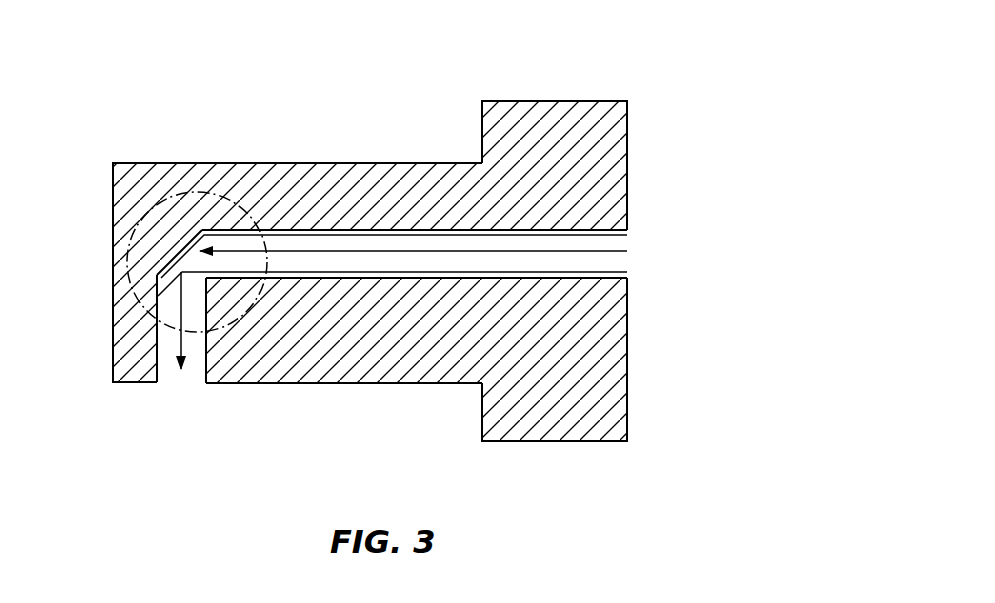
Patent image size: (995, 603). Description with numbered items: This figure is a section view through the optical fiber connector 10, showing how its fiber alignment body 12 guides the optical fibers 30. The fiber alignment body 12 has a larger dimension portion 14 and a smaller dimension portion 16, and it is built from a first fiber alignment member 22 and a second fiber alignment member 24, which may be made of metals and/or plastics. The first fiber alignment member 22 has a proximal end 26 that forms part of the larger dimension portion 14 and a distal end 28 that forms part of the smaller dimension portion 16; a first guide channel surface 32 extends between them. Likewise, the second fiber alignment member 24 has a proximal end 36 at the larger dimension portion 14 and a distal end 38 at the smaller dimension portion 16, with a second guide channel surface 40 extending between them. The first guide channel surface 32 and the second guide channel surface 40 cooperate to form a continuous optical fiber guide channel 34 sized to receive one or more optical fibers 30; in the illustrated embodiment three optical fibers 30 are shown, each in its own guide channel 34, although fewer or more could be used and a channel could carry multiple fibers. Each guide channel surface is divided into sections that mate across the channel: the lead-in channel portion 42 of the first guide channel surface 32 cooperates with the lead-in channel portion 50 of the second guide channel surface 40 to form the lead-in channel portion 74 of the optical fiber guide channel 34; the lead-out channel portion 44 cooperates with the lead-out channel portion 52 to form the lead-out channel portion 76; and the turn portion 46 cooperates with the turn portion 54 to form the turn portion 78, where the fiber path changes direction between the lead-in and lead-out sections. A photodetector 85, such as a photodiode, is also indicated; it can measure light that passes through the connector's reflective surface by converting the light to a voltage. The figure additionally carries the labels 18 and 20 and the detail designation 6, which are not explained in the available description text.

The optical fiber connector 10 is at (712, 48).
The fiber alignment body 12 is at (341, 150).
The larger dimension portion 14 is at (584, 73).
The smaller dimension portion 16 is at (178, 130).
The melt inlet 18 is at (665, 249).
The melt outlet 20 is at (170, 414).
The first fiber alignment member 22 is at (280, 162).
The second fiber alignment member 24 is at (330, 372).
The proximal end 26 is at (628, 203).
The distal end 28 is at (112, 262).
The optical fibers 30 is at (348, 262).
The first guide channel surface 32 is at (391, 229).
The optical fiber guide channel 34 is at (445, 274).
The proximal end 36 is at (622, 357).
The distal end 38 is at (207, 370).
The second guide channel surface 40 is at (517, 280).
The lead-in channel portion 42 is at (493, 229).
The lead-out channel portion 44 is at (155, 350).
The turn portion 46 is at (158, 258).
The lead-in channel portion 50 is at (560, 278).
The lead-out channel portion 52 is at (207, 350).
The turn portion 54 is at (233, 258).
The detail circle for FIG. 6 is at (225, 331).
The lead-in channel portion 74 is at (569, 226).
The lead-out channel portion 76 is at (145, 306).
The turn portion 78 is at (186, 216).
The photodetector 85 is at (170, 262).